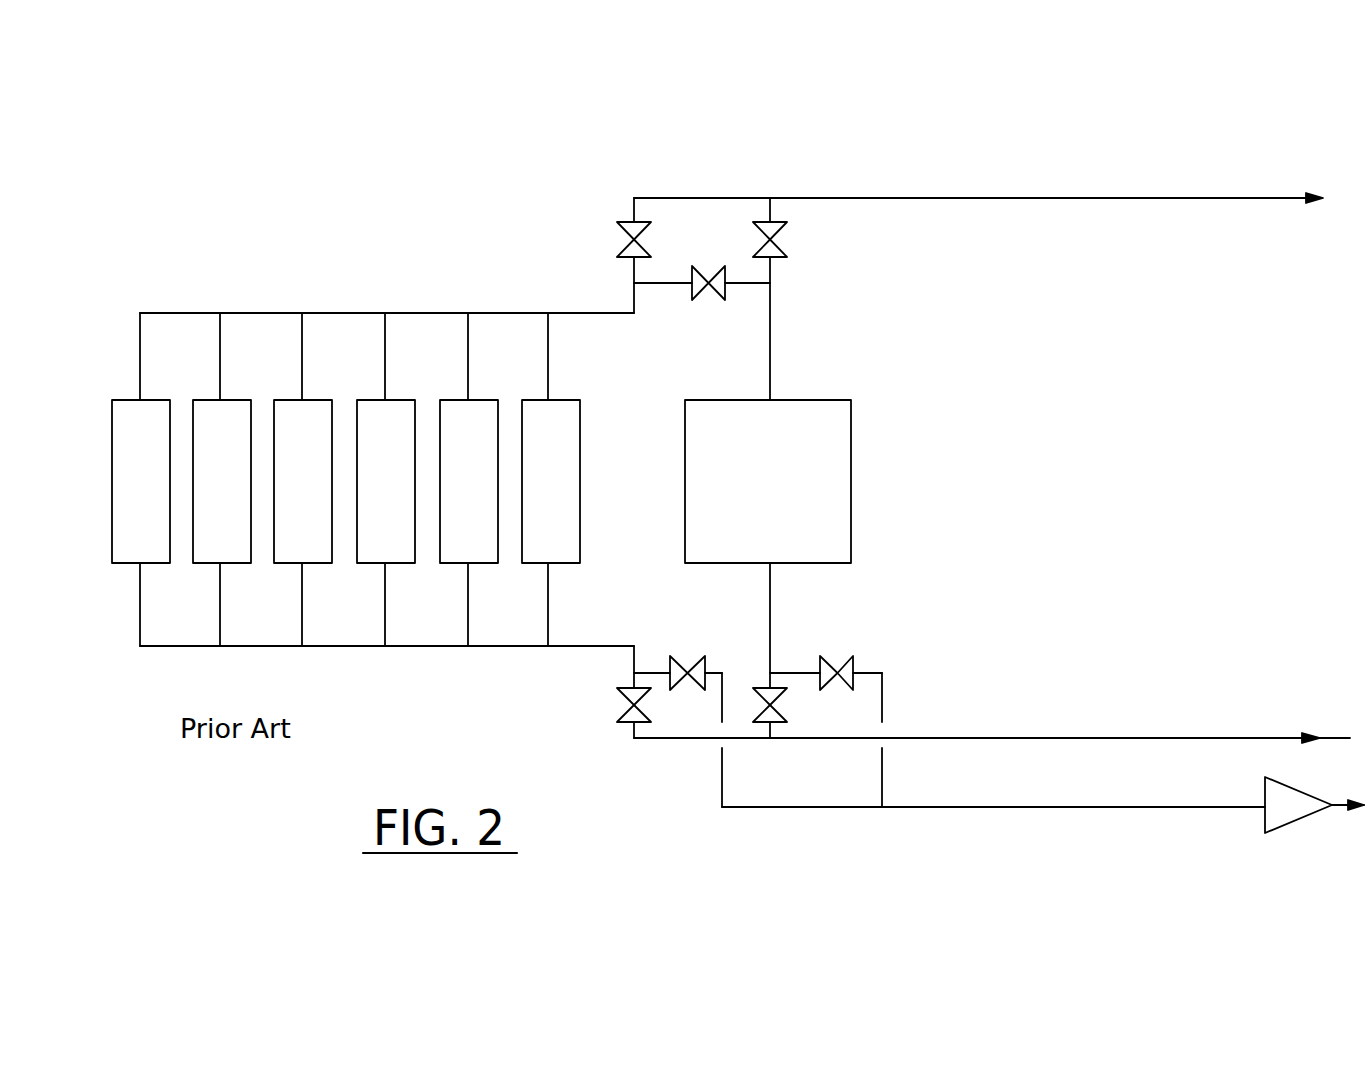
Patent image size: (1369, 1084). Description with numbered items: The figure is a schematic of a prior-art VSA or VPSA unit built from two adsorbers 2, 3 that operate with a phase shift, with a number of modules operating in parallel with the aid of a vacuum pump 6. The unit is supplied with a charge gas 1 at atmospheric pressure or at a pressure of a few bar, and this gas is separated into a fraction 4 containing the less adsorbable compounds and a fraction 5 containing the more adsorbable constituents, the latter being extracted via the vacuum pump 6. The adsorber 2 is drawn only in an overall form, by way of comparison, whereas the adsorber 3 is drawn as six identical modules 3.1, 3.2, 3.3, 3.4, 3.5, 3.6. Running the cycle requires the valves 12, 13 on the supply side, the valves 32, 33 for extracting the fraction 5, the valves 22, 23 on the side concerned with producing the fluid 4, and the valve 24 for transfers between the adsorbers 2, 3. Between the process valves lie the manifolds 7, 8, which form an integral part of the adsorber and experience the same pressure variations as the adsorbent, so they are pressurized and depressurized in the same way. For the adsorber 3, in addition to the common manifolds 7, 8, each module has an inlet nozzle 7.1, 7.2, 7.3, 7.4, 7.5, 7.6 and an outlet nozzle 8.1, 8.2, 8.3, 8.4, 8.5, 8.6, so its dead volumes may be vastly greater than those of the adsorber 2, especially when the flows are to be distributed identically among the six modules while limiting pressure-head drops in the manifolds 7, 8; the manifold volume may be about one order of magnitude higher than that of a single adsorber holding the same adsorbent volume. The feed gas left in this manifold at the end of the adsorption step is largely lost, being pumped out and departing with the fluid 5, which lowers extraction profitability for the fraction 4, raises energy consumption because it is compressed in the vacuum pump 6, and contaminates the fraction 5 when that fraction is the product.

The charge gas 1 is at (992, 724).
The adsorber 2 is at (838, 462).
The adsorber 3 is at (106, 580).
The module 3.1 is at (551, 481).
The module 3.2 is at (469, 481).
The module 3.3 is at (386, 481).
The module 3.4 is at (303, 481).
The module 3.5 is at (222, 481).
The module 3.6 is at (141, 481).
The fraction 4 is at (1218, 197).
The fraction 5 is at (1338, 805).
The vacuum pump 6 is at (1278, 810).
The manifold 7 is at (770, 583).
The inlet nozzle 7.1 is at (548, 622).
The inlet nozzle 7.2 is at (468, 622).
The inlet nozzle 7.3 is at (385, 622).
The inlet nozzle 7.4 is at (302, 622).
The inlet nozzle 7.5 is at (220, 622).
The inlet nozzle 7.6 is at (140, 622).
The manifold 8 is at (770, 318).
The outlet nozzle 8.1 is at (548, 372).
The outlet nozzle 8.2 is at (468, 372).
The outlet nozzle 8.3 is at (385, 372).
The outlet nozzle 8.4 is at (302, 372).
The outlet nozzle 8.5 is at (220, 372).
The outlet nozzle 8.6 is at (140, 372).
The valve 12 is at (783, 697).
The valve 13 is at (628, 703).
The valve 22 is at (790, 240).
The valve 23 is at (617, 238).
The valve 24 is at (700, 272).
The valve 32 is at (838, 670).
The valve 33 is at (687, 670).